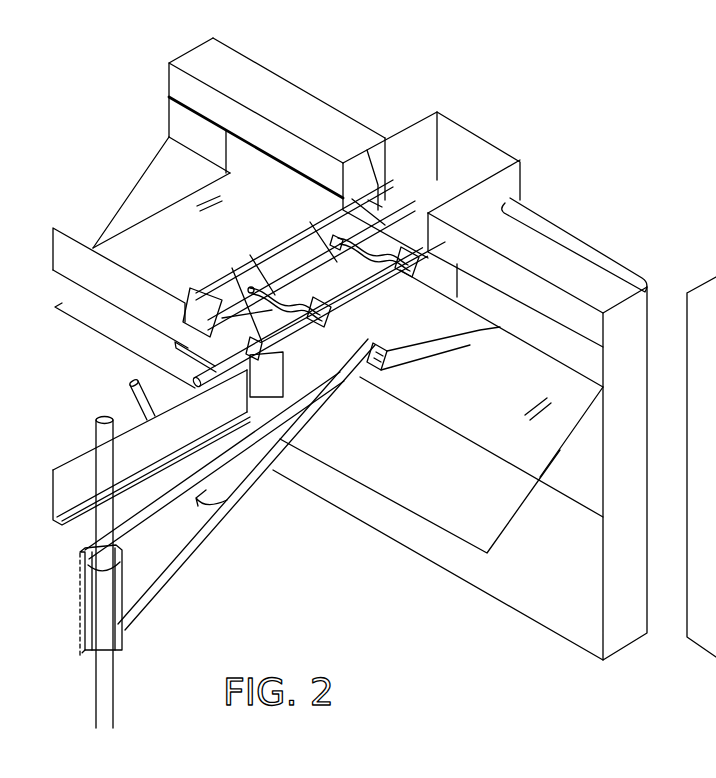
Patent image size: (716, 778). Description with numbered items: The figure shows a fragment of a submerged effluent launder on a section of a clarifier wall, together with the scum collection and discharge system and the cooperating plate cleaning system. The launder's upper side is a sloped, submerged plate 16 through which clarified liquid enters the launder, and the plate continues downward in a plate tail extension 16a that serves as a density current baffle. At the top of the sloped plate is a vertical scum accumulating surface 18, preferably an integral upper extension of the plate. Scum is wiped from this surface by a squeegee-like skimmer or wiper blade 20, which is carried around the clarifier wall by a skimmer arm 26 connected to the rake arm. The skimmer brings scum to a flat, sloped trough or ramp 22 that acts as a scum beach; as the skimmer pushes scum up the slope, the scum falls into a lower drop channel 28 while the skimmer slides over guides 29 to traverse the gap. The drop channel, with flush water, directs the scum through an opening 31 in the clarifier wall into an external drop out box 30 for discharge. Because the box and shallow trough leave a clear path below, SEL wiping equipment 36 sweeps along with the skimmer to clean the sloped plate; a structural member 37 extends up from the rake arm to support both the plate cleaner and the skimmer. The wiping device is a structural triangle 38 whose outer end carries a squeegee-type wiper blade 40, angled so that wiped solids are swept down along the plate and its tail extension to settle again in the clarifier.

The sloped, submerged plate 16 is at (568, 390).
The plate tail extension 16a is at (493, 478).
The scum accumulating surface 18 is at (187, 132).
The skimmer or wiper blade 20 is at (455, 182).
The sloped trough or ramp 22 is at (208, 228).
The skimmer arm 26 is at (62, 503).
The drop channel 28 is at (225, 311).
The guides 29 is at (322, 270).
The external drop out box 30 is at (452, 137).
The opening through the clarifier wall 31 is at (372, 157).
The SEL wiping equipment 36 is at (241, 531).
The structural member 37 is at (108, 682).
The structural triangle 38 is at (113, 580).
The squeegee-type wiper blade 40 is at (497, 330).